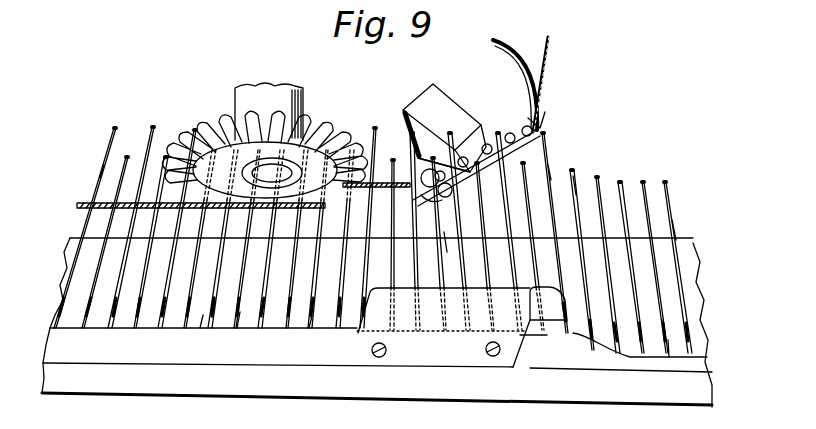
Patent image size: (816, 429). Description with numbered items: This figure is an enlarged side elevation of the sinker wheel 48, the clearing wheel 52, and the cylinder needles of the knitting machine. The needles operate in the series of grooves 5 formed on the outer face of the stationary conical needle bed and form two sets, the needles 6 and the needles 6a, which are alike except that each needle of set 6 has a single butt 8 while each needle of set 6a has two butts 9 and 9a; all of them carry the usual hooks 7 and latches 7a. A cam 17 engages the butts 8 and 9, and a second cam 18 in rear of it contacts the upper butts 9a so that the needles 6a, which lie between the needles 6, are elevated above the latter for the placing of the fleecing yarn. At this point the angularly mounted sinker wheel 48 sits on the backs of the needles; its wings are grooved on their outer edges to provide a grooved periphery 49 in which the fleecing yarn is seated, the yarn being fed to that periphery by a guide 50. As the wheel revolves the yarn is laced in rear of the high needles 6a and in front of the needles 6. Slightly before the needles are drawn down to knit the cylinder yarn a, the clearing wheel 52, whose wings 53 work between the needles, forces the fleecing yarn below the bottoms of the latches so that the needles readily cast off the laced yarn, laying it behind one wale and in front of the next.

The grooves 5 is at (216, 282).
The needles 6 is at (480, 228).
The needles 6a is at (580, 174).
The hooks 7 is at (115, 126).
The latches 7a is at (104, 166).
The butt 8 is at (286, 329).
The butt 9 is at (312, 316).
The butt 9a is at (362, 305).
The cam 17 is at (707, 355).
The second cam 18 is at (562, 325).
The sinker wheel 48 is at (497, 137).
The grooved periphery 49 is at (543, 112).
The guide 50 is at (538, 85).
The clearing wheel 52 is at (265, 140).
The wings 53 is at (264, 142).
The cylinder yarn a is at (553, 38).